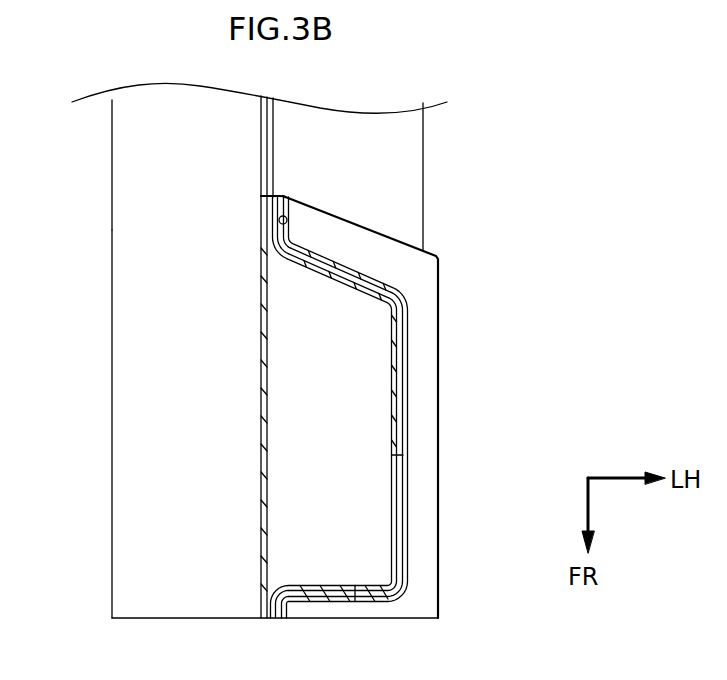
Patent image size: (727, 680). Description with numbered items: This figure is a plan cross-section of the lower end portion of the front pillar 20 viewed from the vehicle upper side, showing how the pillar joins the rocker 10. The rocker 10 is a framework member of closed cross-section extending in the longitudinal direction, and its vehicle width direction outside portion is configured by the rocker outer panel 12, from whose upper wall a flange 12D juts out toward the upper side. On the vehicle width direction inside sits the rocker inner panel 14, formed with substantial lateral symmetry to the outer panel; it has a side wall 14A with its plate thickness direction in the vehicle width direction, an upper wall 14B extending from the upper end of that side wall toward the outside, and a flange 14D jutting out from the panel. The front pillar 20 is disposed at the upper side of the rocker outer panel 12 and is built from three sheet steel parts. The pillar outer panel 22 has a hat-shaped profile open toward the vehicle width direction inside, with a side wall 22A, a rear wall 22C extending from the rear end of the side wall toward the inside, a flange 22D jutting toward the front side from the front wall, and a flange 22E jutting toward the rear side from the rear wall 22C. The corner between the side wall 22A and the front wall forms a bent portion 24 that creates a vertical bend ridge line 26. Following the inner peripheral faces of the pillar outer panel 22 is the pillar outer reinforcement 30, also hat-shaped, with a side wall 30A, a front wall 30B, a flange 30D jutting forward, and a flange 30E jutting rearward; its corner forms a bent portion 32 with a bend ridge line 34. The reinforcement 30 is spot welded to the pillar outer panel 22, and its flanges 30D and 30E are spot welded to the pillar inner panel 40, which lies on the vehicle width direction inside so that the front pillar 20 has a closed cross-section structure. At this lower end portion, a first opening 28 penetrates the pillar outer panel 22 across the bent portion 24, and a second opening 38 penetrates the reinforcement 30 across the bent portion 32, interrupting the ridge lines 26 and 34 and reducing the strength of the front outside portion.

The rocker 10 is at (110, 407).
The rocker outer panel 12 is at (424, 171).
The flange 12D is at (280, 146).
The rocker inner panel 14 is at (111, 335).
The side wall 14A is at (110, 257).
The upper wall 14B is at (123, 200).
The flange 14D is at (260, 137).
The front pillar 20 is at (408, 298).
The front pillar outer panel 22 is at (408, 343).
The side wall 22A is at (408, 393).
The rear wall 22C is at (348, 262).
The flange 22D is at (287, 600).
The flange 22E is at (288, 200).
The bent portion 24 is at (402, 593).
The bend ridge line 26 is at (315, 594).
The first opening 28 is at (405, 472).
The front pillar outer reinforcement 30 is at (390, 377).
The side wall 30A is at (392, 413).
The front wall 30B is at (306, 582).
The flange 30D is at (268, 607).
The flange 30E is at (281, 219).
The bent portion 32 is at (405, 582).
The bend ridge line 34 is at (384, 593).
The second opening 38 is at (373, 585).
The front pillar inner panel 40 is at (260, 487).